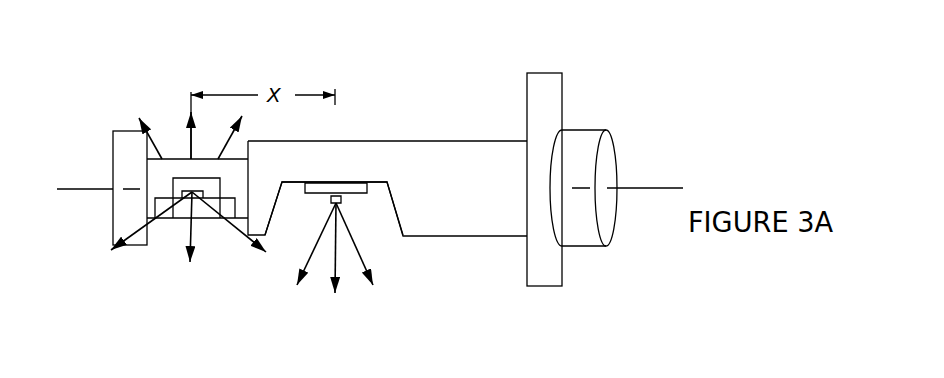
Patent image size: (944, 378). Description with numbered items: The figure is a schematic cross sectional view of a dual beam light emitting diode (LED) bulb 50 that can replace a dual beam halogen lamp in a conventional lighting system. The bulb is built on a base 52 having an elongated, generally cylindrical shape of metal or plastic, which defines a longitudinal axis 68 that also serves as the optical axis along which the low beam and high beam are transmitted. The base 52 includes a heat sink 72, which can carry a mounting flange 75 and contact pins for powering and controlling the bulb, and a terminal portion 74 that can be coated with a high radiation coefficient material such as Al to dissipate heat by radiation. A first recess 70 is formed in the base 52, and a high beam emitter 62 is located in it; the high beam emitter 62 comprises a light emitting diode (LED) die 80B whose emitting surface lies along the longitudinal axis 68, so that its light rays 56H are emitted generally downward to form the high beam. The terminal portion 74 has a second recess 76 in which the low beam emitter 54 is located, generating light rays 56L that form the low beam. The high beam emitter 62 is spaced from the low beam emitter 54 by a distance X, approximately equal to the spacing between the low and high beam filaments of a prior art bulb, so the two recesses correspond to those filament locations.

The dual beam light emitting diode (LED) bulb 50 is at (360, 72).
The base 52 is at (458, 148).
The low beam emitter 54 is at (203, 207).
The light rays 56L is at (188, 140).
The light rays 56H is at (335, 268).
The high beam emitter 62 is at (364, 202).
The longitudinal axis 68 is at (653, 187).
The first recess 70 is at (398, 227).
The heat sink 72 is at (585, 232).
The terminal portion 74 is at (122, 152).
The mounting flange 75 is at (550, 80).
The second recess 76 is at (152, 245).
The light emitting diode (LED) die 80B is at (328, 198).